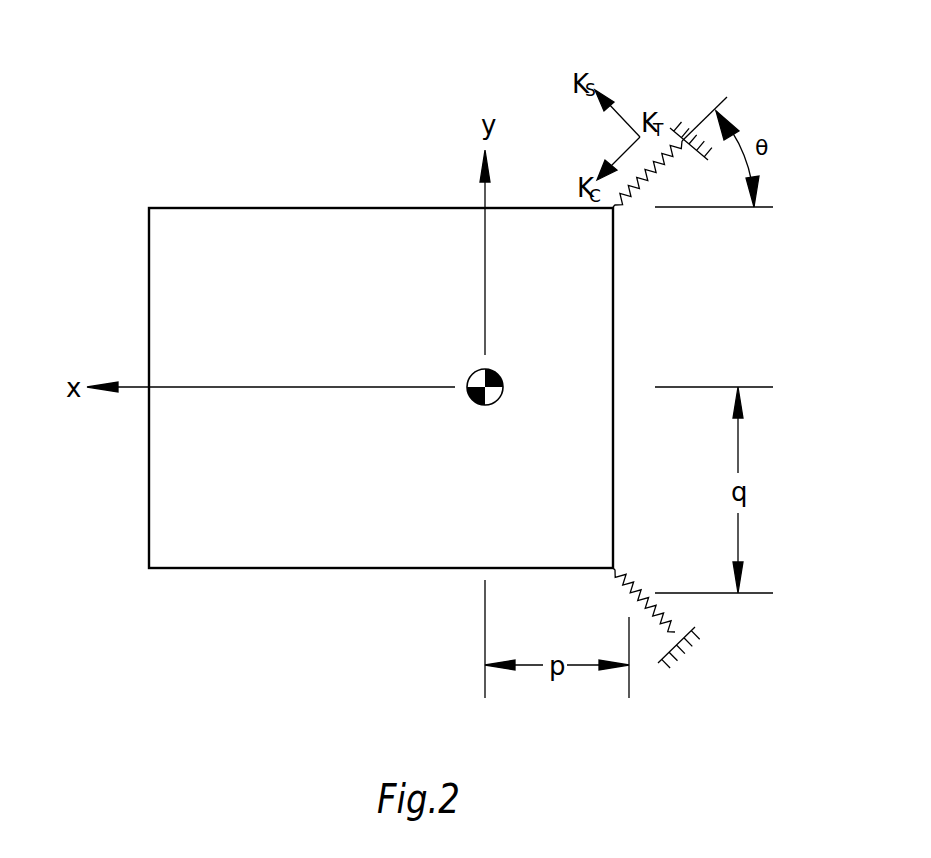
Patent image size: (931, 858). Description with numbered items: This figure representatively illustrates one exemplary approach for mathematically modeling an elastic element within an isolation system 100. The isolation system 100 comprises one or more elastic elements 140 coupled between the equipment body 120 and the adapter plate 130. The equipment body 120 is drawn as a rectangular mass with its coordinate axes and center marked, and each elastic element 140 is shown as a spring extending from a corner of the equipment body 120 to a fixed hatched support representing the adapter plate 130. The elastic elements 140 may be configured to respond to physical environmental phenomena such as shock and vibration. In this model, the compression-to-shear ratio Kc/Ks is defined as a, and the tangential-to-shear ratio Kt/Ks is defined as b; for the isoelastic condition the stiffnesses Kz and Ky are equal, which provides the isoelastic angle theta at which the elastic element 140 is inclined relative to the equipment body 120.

The isolation system 100 is at (132, 52).
The equipment body 120 is at (272, 207).
The adapter plate 130 is at (672, 127).
The elastic element 140 is at (621, 208).